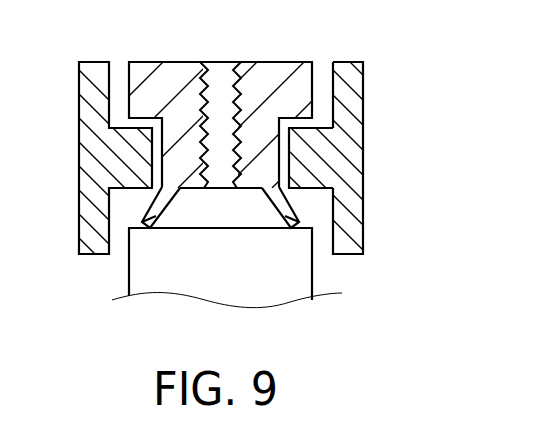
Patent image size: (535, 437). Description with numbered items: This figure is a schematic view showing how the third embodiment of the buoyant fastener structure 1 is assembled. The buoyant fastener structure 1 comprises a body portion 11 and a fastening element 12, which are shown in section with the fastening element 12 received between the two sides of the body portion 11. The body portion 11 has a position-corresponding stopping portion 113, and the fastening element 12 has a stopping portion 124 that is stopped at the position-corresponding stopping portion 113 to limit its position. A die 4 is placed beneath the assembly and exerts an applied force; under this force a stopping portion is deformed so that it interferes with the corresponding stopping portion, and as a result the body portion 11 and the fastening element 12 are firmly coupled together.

The buoyant fastener structure 1 is at (267, 150).
The body portion 11 is at (267, 158).
The position-corresponding stopping portion 113 is at (317, 188).
The fastening element 12 is at (241, 150).
The stopping portion 124 is at (289, 216).
The die 4 is at (142, 273).